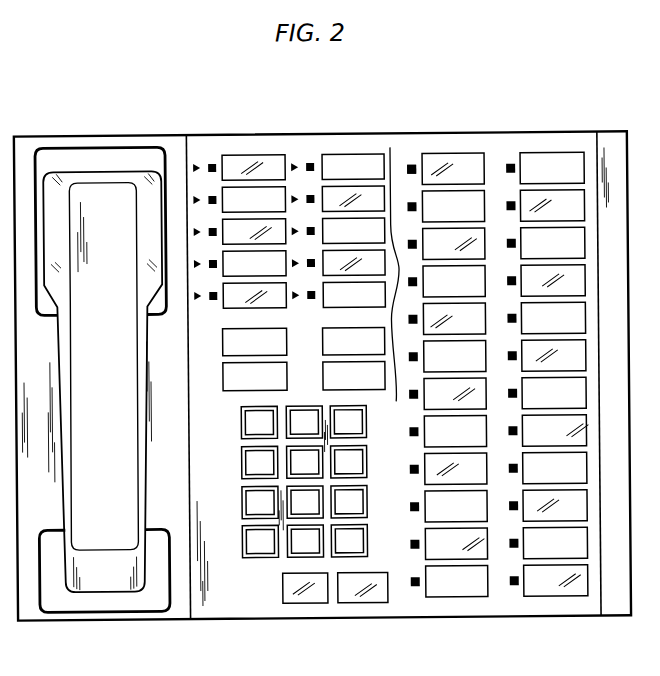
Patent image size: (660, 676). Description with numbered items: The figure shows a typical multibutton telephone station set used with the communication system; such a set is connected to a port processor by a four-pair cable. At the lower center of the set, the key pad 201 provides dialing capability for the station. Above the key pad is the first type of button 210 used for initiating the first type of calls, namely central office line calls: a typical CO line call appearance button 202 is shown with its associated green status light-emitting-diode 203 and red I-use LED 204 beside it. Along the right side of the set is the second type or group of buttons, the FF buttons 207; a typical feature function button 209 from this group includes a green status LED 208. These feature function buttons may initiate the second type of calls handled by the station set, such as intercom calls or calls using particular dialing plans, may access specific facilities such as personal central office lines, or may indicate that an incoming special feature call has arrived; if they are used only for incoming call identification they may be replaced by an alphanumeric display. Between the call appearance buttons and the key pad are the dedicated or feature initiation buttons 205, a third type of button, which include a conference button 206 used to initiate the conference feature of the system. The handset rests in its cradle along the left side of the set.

The key pad 201 is at (243, 400).
The CO line call appearance button 202 is at (260, 154).
The green status light-emitting-diode 203 is at (214, 161).
The red I-use LED 204 is at (199, 161).
The dedicated or feature initiation buttons 205 is at (286, 353).
The conference button 206 is at (272, 327).
The FF buttons 207 is at (417, 119).
The green status LED 208 is at (407, 164).
The feature function button 209 is at (413, 164).
The first type of button 210 is at (395, 284).